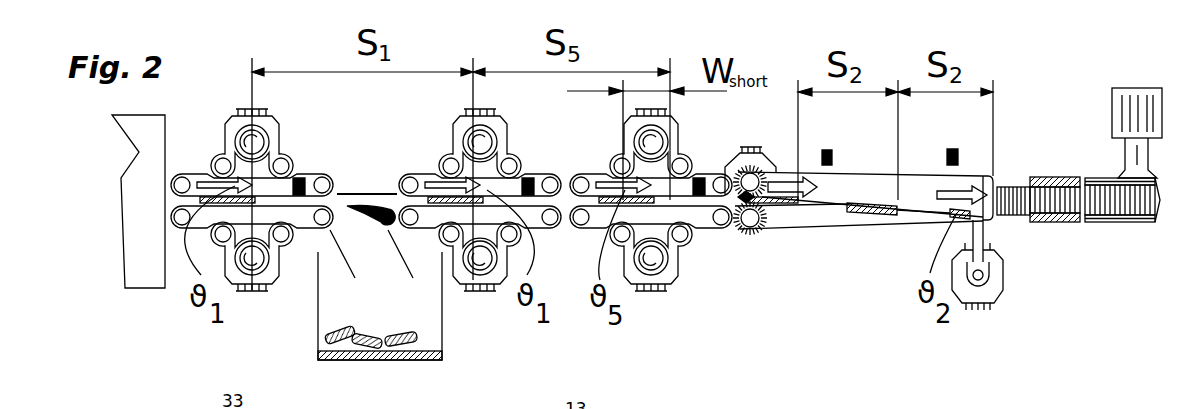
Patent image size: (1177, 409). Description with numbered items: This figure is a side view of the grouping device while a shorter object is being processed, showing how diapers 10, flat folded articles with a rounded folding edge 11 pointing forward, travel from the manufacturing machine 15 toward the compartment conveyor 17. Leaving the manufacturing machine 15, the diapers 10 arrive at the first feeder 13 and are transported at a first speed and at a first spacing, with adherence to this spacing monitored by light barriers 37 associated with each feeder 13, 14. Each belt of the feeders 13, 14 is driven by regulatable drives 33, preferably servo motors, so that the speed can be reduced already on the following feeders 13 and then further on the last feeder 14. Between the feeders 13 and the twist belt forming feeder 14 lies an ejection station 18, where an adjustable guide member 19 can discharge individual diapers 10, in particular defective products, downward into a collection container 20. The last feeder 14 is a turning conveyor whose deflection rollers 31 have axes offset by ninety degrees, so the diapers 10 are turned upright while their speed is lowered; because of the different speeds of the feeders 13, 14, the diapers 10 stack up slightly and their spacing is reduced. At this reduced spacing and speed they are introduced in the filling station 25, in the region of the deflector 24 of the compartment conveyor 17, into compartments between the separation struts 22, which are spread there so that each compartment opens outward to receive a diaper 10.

The diaper 10 is at (1047, 217).
The rounded folding edge 11 is at (405, 346).
The feeder 13 is at (222, 108).
The feeder 14 is at (880, 182).
The manufacturing machine 15 is at (137, 232).
The compartment conveyor 17 is at (1123, 237).
The ejection station 18 is at (360, 172).
The adjustable guide member 19 is at (378, 223).
The collection container 20 is at (317, 288).
The separation strut 22 is at (1005, 187).
The deflector 24 is at (1150, 232).
The filling station 25 is at (1060, 130).
The deflection roller 31 is at (752, 216).
The drive 33 is at (995, 290).
The light barrier 37 is at (950, 150).